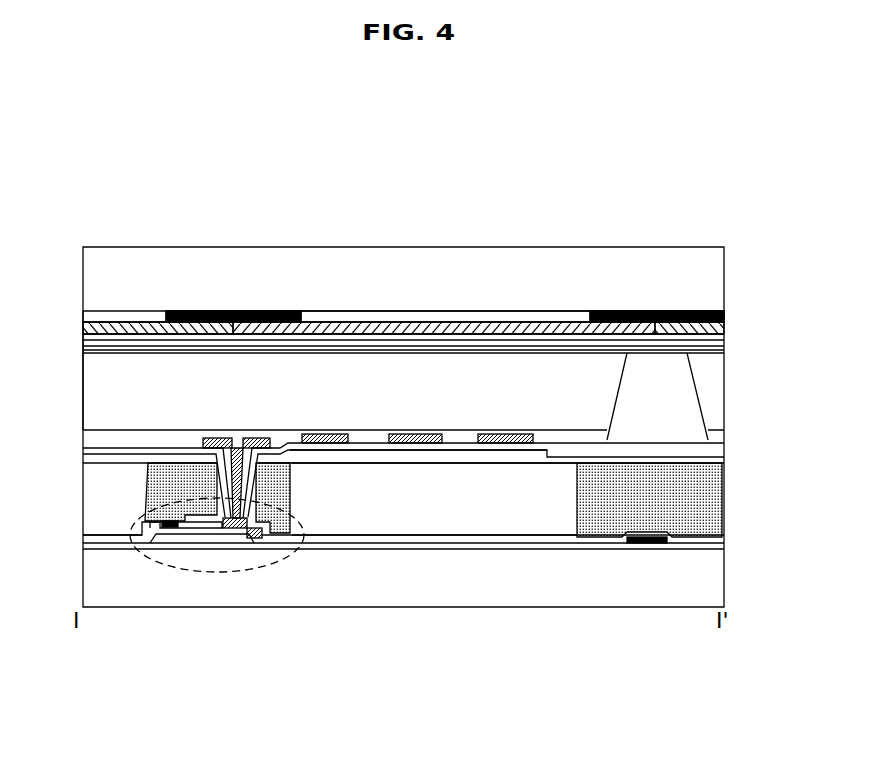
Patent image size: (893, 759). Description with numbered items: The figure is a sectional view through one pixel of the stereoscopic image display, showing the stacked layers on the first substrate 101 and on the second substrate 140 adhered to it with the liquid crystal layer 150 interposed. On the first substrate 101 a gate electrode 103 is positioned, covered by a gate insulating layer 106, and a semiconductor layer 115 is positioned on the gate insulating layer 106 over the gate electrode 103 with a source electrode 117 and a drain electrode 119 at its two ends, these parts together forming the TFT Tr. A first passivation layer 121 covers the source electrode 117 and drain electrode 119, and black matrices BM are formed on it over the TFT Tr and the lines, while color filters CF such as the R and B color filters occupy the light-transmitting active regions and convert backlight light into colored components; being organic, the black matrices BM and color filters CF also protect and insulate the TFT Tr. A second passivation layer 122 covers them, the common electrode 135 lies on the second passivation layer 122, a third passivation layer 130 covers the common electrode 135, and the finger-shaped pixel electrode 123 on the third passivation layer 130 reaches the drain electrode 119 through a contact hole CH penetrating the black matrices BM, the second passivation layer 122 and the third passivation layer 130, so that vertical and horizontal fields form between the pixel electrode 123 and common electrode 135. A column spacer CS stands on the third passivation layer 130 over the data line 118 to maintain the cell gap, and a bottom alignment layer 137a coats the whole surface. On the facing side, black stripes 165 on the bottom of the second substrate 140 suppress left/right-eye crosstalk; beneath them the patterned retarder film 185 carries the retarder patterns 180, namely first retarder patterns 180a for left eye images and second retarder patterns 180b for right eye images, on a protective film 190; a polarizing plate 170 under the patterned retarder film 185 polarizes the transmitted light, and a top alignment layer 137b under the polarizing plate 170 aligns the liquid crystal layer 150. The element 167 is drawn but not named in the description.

The second substrate 140 is at (716, 276).
The black stripes 165 is at (724, 318).
The retarder patterns 180 is at (418, 236).
The first retarder patterns 180a is at (133, 328).
The second retarder patterns 180b is at (518, 255).
The patterned retarder film 185 is at (413, 148).
The protective film 190 is at (387, 340).
The overcoat layer 167 is at (477, 318).
The polarizing plate 170 is at (724, 340).
The top alignment layer 137b is at (724, 350).
The column spacer CS is at (682, 398).
The bottom alignment layer 137a is at (716, 436).
The liquid crystal layer 150 is at (90, 376).
The pixel electrode 123 is at (205, 436).
The third passivation layer 130 is at (717, 447).
The second passivation layer 122 is at (717, 458).
The black matrices BM is at (717, 505).
The R color filter R is at (434, 511).
The B color filter B is at (112, 511).
The TFT Tr is at (137, 520).
The gate insulating layer 106 is at (715, 547).
The data line 118 is at (648, 545).
The first substrate 101 is at (543, 587).
The color filters CF is at (495, 515).
The common electrode 135 is at (392, 450).
The gate electrode 103 is at (228, 547).
The semiconductor layer 115 is at (208, 532).
The source electrode 117 is at (170, 530).
The contact hole CH is at (167, 525).
The drain electrode 119 is at (252, 537).
The first passivation layer 121 is at (282, 537).